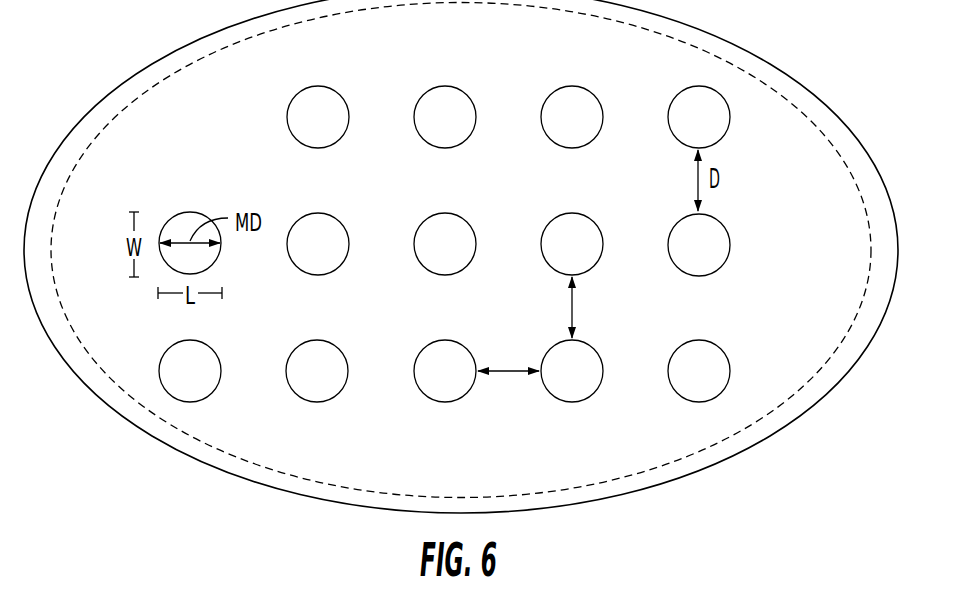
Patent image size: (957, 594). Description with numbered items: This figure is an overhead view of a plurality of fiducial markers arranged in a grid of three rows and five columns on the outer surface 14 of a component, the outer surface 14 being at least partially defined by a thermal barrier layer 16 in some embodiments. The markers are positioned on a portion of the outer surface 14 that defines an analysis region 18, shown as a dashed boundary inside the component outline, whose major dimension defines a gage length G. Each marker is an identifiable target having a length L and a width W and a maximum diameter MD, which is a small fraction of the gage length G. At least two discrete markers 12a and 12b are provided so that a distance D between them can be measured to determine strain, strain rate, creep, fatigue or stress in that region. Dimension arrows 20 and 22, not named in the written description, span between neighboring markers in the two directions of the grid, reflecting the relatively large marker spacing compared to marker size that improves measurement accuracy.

The fiducial marker 12a is at (692, 100).
The fiducial marker 12b is at (712, 258).
The outer surface 14 is at (461, 256).
The thermal barrier layer 16 is at (773, 68).
The analysis region 18 is at (217, 52).
The aperture spacing in cross direction 20 is at (513, 373).
The aperture spacing in machine direction 22 is at (573, 300).